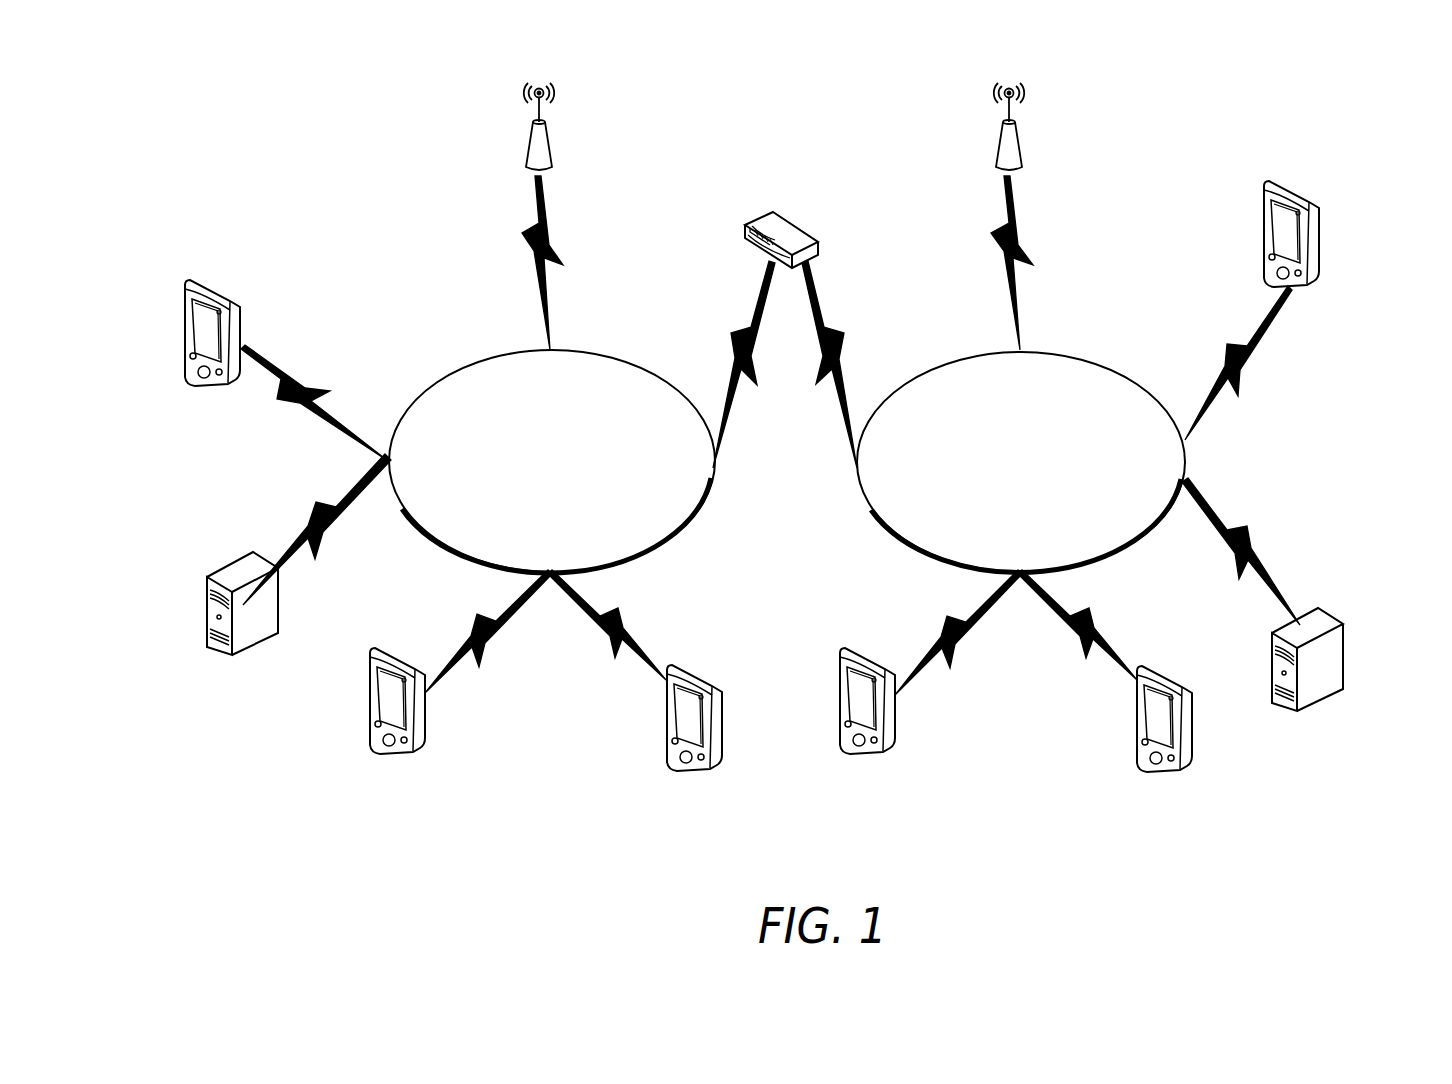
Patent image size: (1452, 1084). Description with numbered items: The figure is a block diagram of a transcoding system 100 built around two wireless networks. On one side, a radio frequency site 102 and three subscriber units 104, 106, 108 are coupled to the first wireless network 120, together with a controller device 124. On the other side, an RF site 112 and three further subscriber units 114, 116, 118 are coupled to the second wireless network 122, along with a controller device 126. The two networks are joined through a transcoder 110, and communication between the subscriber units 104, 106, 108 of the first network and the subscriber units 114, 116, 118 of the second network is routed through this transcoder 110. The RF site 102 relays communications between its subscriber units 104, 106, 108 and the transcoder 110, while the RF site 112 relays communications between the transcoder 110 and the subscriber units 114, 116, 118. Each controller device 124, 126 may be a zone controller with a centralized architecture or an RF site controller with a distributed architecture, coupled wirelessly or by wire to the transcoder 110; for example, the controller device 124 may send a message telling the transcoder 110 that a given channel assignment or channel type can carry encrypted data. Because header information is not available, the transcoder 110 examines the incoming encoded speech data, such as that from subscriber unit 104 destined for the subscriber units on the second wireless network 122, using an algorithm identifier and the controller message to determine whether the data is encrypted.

The transcoding system 100 is at (198, 107).
The RF site 102 is at (552, 148).
The subscriber unit 104 is at (183, 325).
The subscriber unit 106 is at (426, 710).
The subscriber unit 108 is at (723, 728).
The transcoder 110 is at (818, 250).
The RF site 112 is at (1022, 148).
The subscriber unit 114 is at (1320, 242).
The subscriber unit 116 is at (1195, 727).
The subscriber unit 118 is at (897, 710).
The wireless network 1 120 is at (490, 358).
The wireless network 2 122 is at (1090, 360).
The controller device 124 is at (267, 603).
The controller device 126 is at (1307, 643).